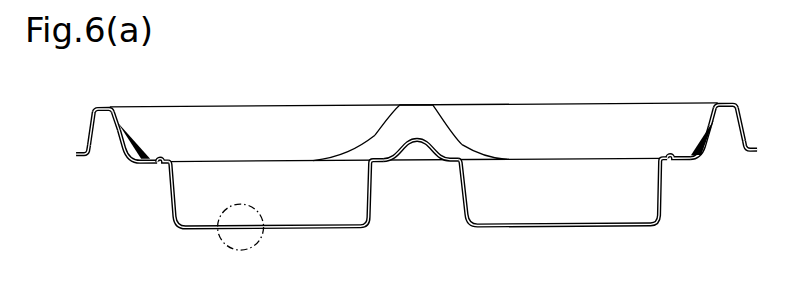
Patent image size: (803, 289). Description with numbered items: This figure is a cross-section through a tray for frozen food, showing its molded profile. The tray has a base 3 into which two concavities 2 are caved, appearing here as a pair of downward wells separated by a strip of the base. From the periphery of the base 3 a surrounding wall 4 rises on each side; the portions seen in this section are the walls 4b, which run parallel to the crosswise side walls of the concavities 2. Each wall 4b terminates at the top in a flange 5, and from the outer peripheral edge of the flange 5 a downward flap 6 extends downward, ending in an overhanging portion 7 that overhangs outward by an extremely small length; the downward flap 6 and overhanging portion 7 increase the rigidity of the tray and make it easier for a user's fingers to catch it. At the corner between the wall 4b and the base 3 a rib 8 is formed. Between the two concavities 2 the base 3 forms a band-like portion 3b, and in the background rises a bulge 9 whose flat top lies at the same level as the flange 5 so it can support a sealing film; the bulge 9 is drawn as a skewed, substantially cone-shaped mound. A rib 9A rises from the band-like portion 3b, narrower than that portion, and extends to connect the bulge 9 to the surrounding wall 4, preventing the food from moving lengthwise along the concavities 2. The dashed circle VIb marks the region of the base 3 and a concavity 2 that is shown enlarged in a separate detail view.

The concavities 2 is at (316, 204).
The base 3 is at (160, 163).
The band-like portion 3b is at (380, 159).
The surrounding wall 4 is at (120, 146).
The walls 4b is at (117, 119).
The flange 5 is at (100, 105).
The downward flap 6 is at (88, 141).
The overhanging portion 7 is at (77, 154).
The ribs 8 is at (697, 144).
The bulges 9 is at (423, 130).
The ribs 9A is at (421, 139).
The VIb portion VIb is at (217, 242).